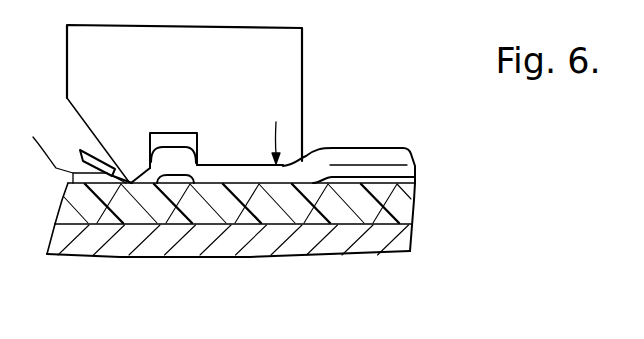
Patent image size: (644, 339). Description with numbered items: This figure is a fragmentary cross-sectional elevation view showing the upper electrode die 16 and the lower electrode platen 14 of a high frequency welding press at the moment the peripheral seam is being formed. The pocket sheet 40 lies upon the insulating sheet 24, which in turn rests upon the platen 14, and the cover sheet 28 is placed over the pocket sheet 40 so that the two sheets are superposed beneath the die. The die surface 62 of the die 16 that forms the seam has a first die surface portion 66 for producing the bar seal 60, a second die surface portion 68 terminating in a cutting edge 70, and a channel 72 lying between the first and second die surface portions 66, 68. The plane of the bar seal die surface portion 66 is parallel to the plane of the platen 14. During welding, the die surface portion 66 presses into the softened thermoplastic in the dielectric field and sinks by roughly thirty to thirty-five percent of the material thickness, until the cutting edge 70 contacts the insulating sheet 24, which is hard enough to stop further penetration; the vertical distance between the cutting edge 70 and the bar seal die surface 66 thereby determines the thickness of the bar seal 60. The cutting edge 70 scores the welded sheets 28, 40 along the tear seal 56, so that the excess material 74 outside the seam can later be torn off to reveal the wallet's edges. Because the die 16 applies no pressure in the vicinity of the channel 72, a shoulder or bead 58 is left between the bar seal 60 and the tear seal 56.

The platen 14 is at (400, 250).
The upper electrode die 16 is at (318, 53).
The insulating sheet 24 is at (386, 206).
The cover sheet 28 is at (385, 155).
The pocket sheet 40 is at (408, 169).
The tear seal 56 is at (151, 176).
The bead 58 is at (173, 146).
The bar seal 60 is at (284, 181).
The die surface 62 is at (276, 130).
The first die surface portion 66 is at (225, 163).
The second die surface portion 68 is at (137, 178).
The cutting edge 70 is at (130, 181).
The channel 72 is at (163, 132).
The excess material 74 is at (80, 151).